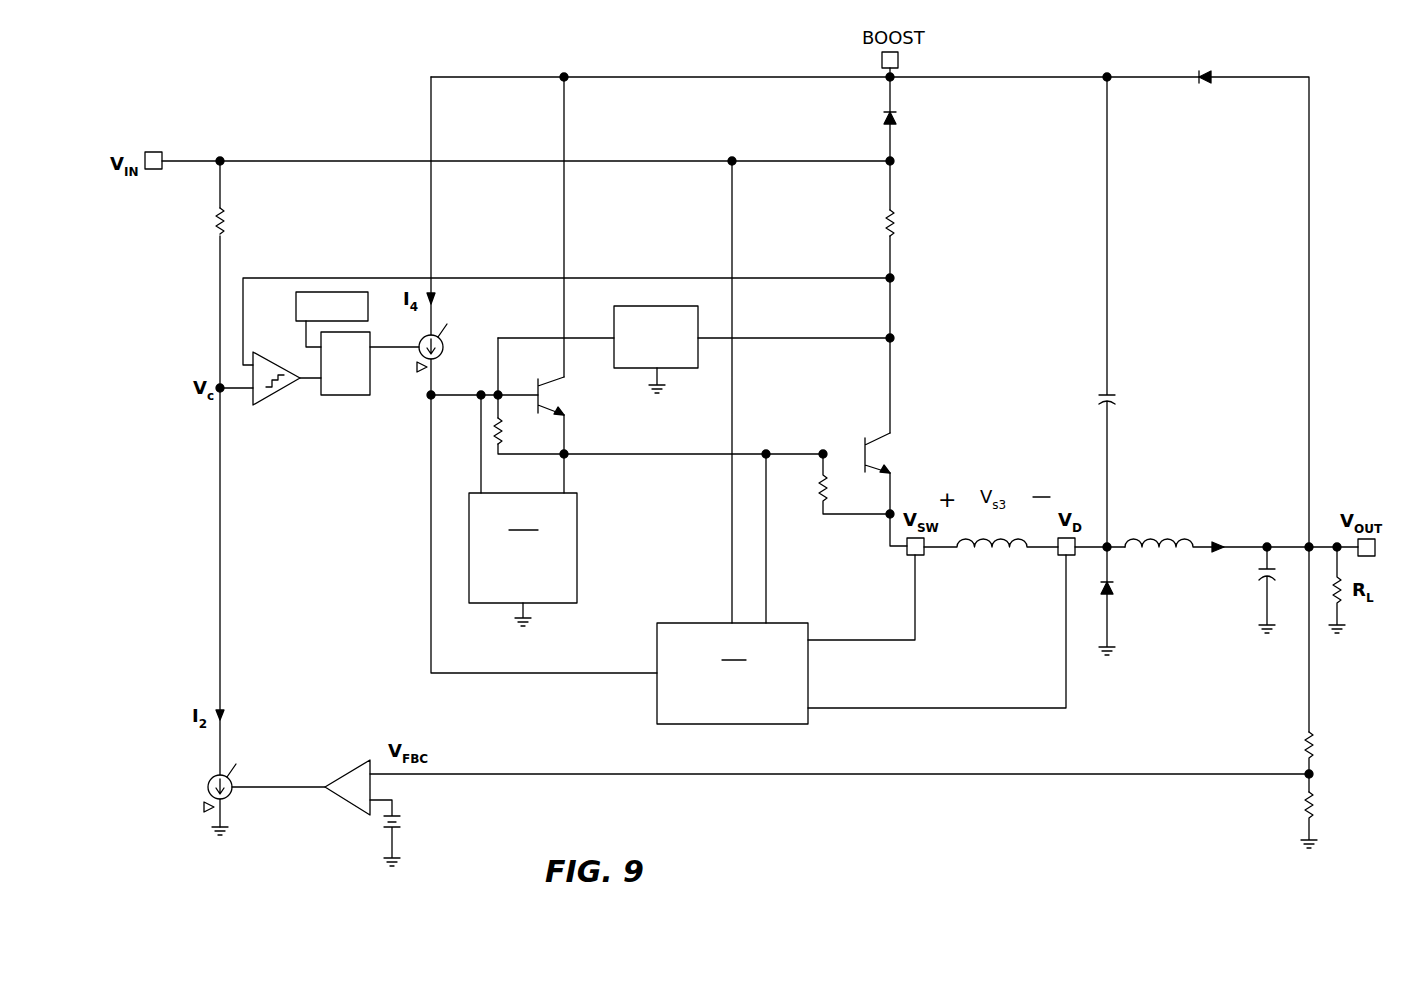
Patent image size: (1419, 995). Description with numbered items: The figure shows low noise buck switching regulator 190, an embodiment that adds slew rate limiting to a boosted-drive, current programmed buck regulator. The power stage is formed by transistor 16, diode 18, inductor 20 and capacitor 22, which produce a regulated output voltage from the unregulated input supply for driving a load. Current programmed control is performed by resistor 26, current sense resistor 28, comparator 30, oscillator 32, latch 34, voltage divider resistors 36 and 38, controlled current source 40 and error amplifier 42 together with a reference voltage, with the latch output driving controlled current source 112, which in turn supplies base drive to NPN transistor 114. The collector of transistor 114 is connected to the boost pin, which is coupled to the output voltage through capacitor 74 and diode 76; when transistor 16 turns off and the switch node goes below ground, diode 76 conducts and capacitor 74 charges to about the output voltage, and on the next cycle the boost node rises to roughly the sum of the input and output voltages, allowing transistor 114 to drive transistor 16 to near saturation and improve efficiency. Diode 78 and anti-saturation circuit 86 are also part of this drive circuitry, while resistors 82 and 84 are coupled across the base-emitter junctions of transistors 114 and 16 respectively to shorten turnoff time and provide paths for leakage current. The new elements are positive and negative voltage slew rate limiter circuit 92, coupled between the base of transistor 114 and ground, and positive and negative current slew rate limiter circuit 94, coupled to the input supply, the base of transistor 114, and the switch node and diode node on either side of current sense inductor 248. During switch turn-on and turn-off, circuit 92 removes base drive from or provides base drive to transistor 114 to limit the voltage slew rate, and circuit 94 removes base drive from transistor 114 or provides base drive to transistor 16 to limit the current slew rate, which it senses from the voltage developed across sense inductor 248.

The transistor 16 is at (893, 440).
The diode 18 is at (1112, 592).
The inductor 20 is at (1158, 536).
The capacitor 22 is at (1262, 575).
The resistor 26 is at (225, 221).
The current sense resistor 28 is at (896, 225).
The comparator 30 is at (277, 400).
The oscillator 32 is at (296, 303).
The latch 34 is at (370, 388).
The voltage divider resistor 36 is at (1314, 748).
The voltage divider resistor 38 is at (1314, 805).
The controlled current source 40 is at (207, 782).
The error amplifier 42 is at (350, 772).
The capacitor 74 is at (1112, 404).
The diode 76 is at (1208, 82).
The diode 78 is at (895, 120).
The resistor 82 is at (503, 430).
The resistor 84 is at (820, 487).
The circuit 86 is at (690, 368).
The positive and negative voltage slew rate limiter circuit 92 is at (578, 533).
The positive and negative current slew rate limiter circuit 94 is at (657, 698).
The controlled current source 112 is at (443, 352).
The NPN transistor 114 is at (560, 382).
The regulator 190 is at (1325, 157).
The sense inductor 248 is at (996, 530).